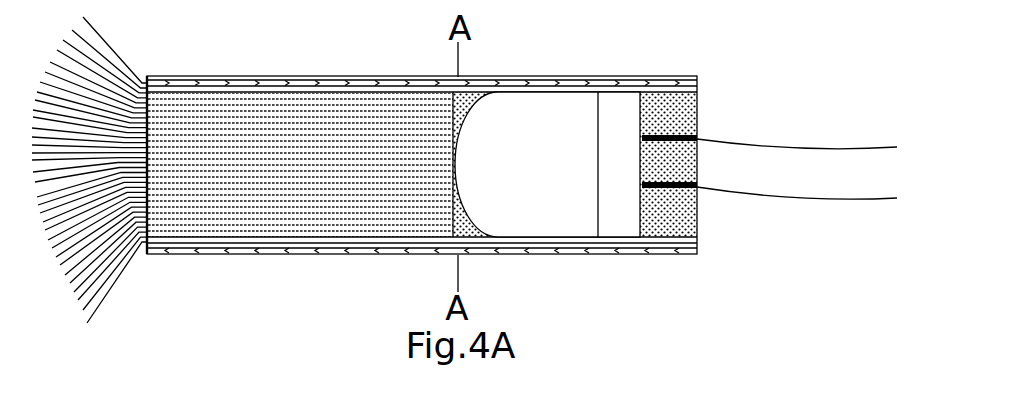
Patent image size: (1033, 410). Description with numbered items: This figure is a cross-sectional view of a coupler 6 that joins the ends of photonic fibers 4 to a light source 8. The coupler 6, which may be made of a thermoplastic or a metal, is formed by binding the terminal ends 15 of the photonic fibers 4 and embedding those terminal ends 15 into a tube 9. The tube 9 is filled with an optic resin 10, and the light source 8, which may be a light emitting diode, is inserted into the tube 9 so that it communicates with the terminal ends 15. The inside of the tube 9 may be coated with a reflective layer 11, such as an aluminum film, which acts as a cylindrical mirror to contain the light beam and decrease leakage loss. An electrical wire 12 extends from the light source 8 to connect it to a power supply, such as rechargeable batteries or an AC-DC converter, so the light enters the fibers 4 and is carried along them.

The photonic fibers 4 is at (128, 90).
The coupler 6 is at (677, 267).
The light source 8 is at (577, 213).
The tube 9 is at (325, 78).
The optic resin 10 is at (475, 88).
The reflective layer 11 is at (397, 78).
The electrical wire 12 is at (768, 147).
The terminal ends 15 is at (358, 208).